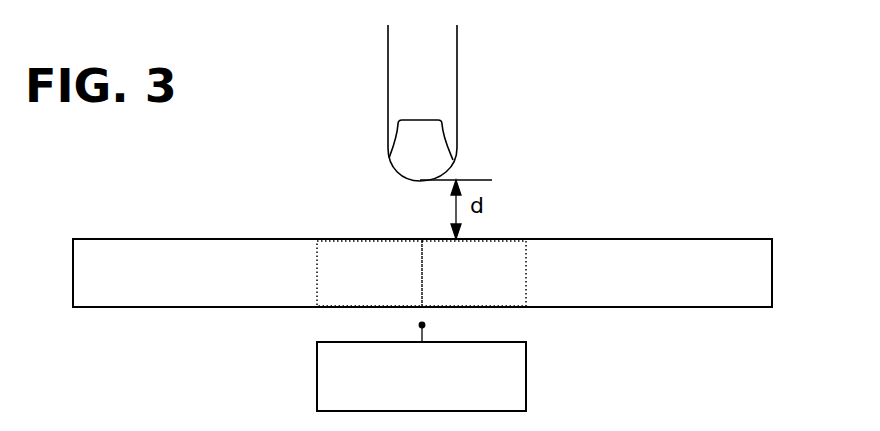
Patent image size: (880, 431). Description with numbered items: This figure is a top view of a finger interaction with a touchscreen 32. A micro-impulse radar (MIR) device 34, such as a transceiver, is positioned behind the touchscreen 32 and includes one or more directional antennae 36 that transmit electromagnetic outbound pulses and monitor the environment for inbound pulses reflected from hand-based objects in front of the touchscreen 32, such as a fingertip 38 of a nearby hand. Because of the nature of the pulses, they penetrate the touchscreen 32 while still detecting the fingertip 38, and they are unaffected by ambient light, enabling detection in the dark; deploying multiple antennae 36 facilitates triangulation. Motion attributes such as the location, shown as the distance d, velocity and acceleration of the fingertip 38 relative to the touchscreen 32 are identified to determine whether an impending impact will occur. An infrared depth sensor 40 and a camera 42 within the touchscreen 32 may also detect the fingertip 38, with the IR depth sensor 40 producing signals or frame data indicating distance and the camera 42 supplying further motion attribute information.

The touchscreen 32 is at (142, 239).
The micro-impulse radar (MIR) device 34 is at (526, 358).
The directional antenna 36 is at (424, 334).
The fingertip 38 is at (404, 178).
The infrared (IR) depth sensor 40 is at (344, 247).
The camera 42 is at (508, 245).